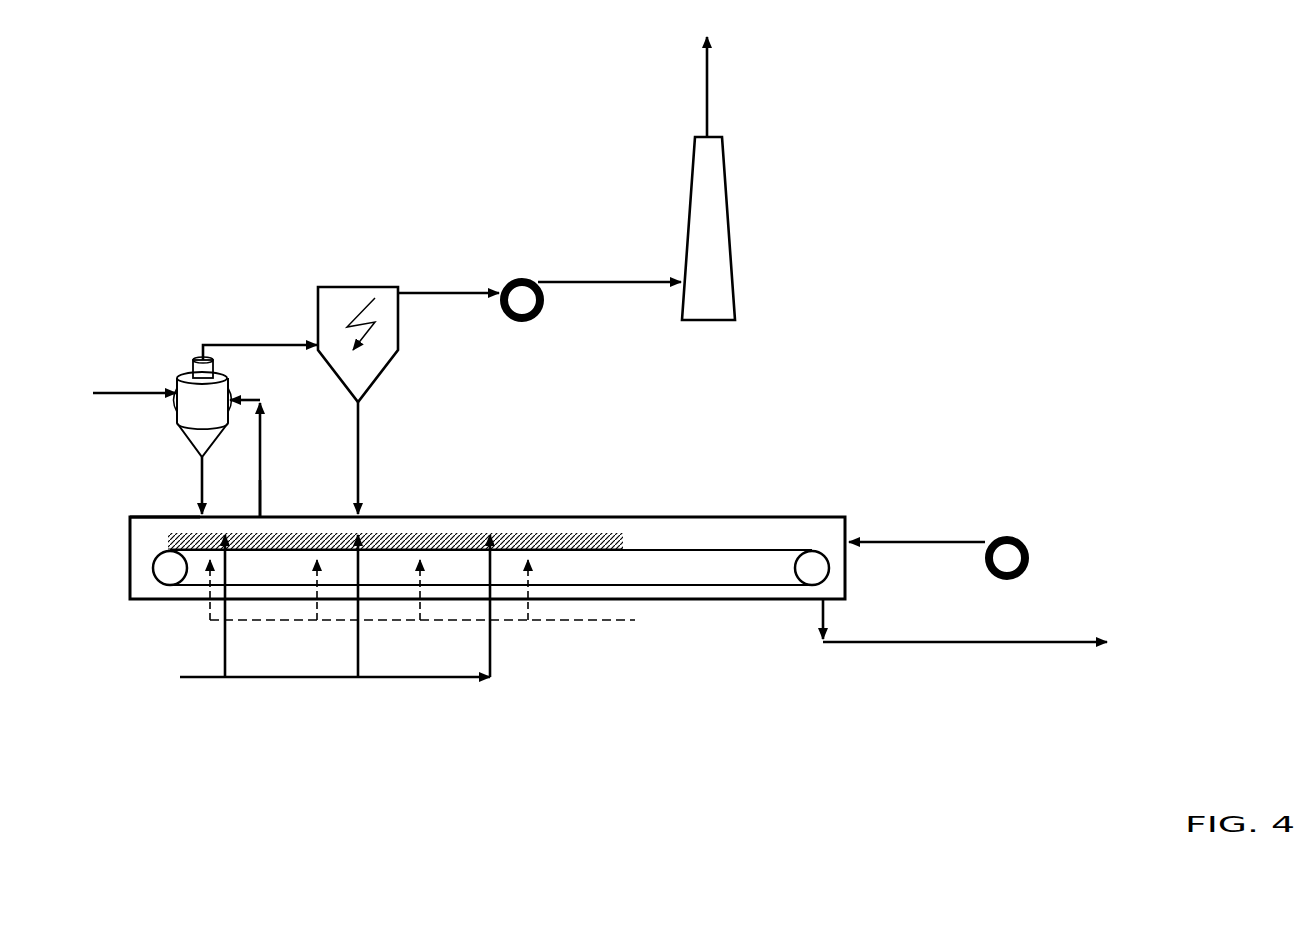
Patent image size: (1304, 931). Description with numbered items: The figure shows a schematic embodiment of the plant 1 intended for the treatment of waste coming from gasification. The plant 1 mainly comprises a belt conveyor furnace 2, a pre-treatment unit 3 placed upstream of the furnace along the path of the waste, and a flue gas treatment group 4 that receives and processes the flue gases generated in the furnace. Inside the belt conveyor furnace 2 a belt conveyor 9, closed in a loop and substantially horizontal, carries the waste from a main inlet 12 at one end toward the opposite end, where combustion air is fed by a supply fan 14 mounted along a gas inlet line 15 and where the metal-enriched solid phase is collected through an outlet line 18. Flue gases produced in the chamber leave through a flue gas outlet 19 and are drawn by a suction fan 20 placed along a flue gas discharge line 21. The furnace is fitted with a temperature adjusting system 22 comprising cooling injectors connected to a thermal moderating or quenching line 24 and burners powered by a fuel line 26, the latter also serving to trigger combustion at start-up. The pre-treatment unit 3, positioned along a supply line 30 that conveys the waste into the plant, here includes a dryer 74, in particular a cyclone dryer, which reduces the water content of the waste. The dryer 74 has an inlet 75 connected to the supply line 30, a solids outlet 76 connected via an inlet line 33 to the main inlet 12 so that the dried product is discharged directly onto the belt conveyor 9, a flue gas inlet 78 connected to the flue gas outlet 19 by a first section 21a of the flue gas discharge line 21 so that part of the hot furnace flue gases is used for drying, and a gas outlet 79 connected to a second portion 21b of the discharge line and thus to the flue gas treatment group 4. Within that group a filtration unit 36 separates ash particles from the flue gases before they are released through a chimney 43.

The plant 1 is at (857, 197).
The belt conveyor furnace 2 is at (725, 523).
The pre-treatment unit 3 is at (191, 356).
The flue gas treatment group 4 is at (356, 347).
The belt conveyor 9 is at (642, 547).
The main inlet 12 is at (203, 520).
The supply fan 14 is at (1013, 555).
The gas inlet line 15 is at (955, 538).
The outlet line 18 is at (910, 647).
The flue gas outlet 19 is at (263, 510).
The suction fan 20 is at (527, 277).
The flue gas discharge line 21 is at (440, 290).
The first section of the flue gas discharge line 21a is at (263, 438).
The second portion of the flue gas discharge line 21b is at (270, 345).
The temperature adjusting system 22 is at (445, 712).
The thermal moderating or quenching line 24 is at (302, 678).
The fuel line 26 is at (600, 623).
The supply line 30 is at (115, 390).
The inlet line 33 is at (181, 481).
The filtration unit 36 is at (332, 298).
The chimney 43 is at (715, 202).
The dryer 74 is at (185, 377).
The inlet 75 is at (177, 407).
The solids outlet 76 is at (220, 485).
The flue gas inlet 78 is at (223, 390).
The gas outlet 79 is at (198, 360).